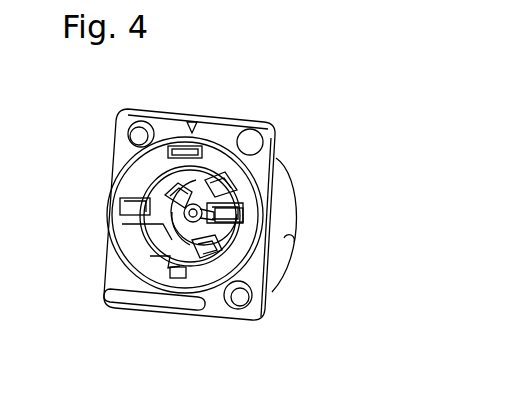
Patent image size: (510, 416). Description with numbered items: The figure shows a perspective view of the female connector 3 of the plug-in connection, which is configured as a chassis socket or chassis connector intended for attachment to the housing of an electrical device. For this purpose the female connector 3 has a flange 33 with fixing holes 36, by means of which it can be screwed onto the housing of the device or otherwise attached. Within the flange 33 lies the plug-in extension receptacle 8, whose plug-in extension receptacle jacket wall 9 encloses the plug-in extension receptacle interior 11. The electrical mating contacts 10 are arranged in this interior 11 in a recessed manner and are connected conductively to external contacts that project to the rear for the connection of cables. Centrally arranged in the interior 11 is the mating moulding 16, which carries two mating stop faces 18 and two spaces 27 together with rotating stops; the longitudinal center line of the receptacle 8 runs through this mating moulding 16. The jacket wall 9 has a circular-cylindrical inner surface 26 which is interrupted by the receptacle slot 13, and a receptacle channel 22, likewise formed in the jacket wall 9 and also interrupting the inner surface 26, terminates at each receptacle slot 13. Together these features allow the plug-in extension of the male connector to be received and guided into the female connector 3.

The female connector 3 is at (255, 110).
The plug-in extension receptacle 8 is at (168, 259).
The plug-in extension receptacle jacket wall 9 is at (284, 204).
The electrical mating contacts 10 is at (172, 207).
The plug-in extension receptacle interior 11 is at (167, 230).
The receptacle slot 13 is at (193, 152).
The mating moulding 16 is at (207, 208).
The mating stop faces 18 is at (214, 190).
The receptacle channel 22 is at (168, 192).
The inner surface 26 is at (158, 260).
The spaces 27 is at (222, 224).
The flange 33 is at (163, 123).
The fixing holes 36 is at (140, 130).